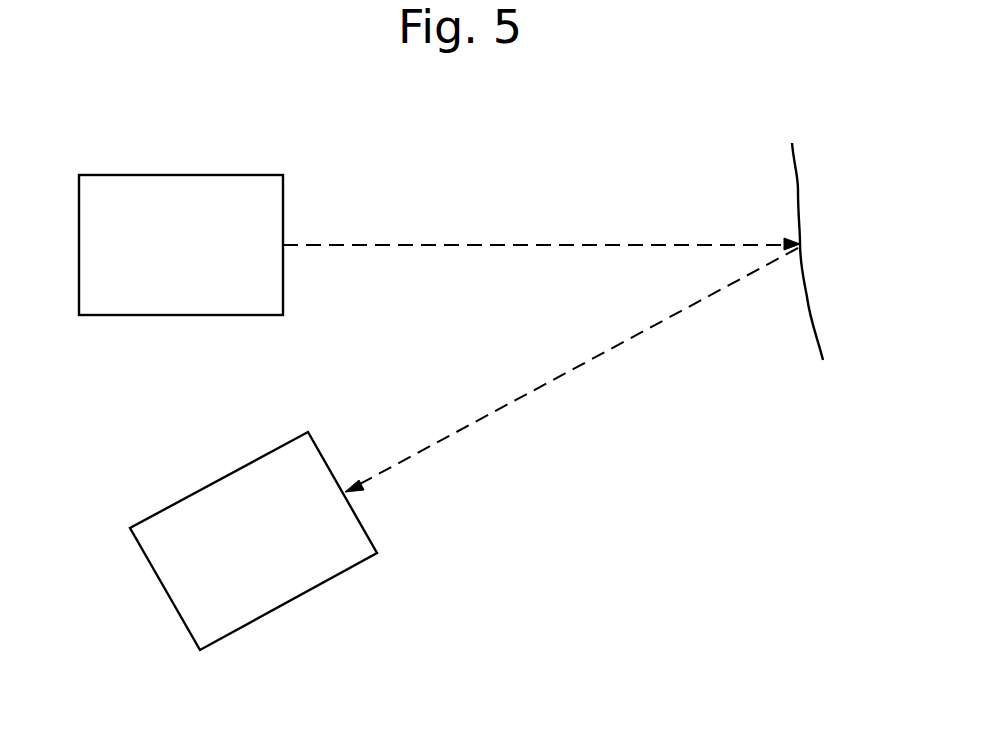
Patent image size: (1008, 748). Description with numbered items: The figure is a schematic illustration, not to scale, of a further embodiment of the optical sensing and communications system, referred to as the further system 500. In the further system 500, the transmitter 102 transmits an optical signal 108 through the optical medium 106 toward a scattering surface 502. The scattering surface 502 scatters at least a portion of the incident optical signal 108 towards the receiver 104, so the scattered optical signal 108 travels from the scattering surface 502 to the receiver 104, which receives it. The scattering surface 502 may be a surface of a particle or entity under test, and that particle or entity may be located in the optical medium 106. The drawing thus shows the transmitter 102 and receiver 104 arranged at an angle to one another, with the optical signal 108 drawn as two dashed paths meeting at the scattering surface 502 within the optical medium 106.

The further system 500 is at (122, 120).
The transmitter 102 is at (255, 175).
The receiver 104 is at (188, 495).
The optical medium 106 is at (522, 328).
The optical signal 108 is at (557, 243).
The scattering surface 502 is at (798, 192).